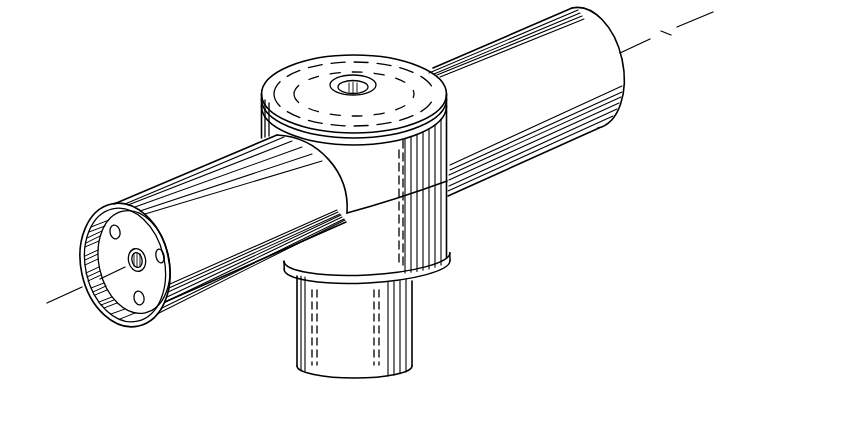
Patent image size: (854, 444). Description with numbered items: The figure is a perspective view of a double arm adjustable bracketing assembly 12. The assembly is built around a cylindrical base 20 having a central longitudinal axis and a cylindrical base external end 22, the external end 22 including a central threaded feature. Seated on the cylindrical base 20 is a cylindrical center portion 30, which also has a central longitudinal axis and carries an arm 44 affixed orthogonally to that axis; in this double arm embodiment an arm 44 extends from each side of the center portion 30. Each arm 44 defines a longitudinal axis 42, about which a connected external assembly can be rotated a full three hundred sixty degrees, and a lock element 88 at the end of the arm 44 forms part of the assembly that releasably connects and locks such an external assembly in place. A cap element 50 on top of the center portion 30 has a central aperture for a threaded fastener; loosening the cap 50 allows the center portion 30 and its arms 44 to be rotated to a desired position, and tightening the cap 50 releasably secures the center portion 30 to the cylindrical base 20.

The double arm adjustable bracketing assembly 12 is at (146, 127).
The cylindrical base 20 is at (424, 268).
The cylindrical base external end 22 is at (403, 329).
The cylindrical center portion 30 is at (262, 132).
The longitudinal axis 42 is at (666, 34).
The arm 44 is at (570, 118).
The cap element 50 is at (353, 57).
The lock element 88 is at (131, 272).